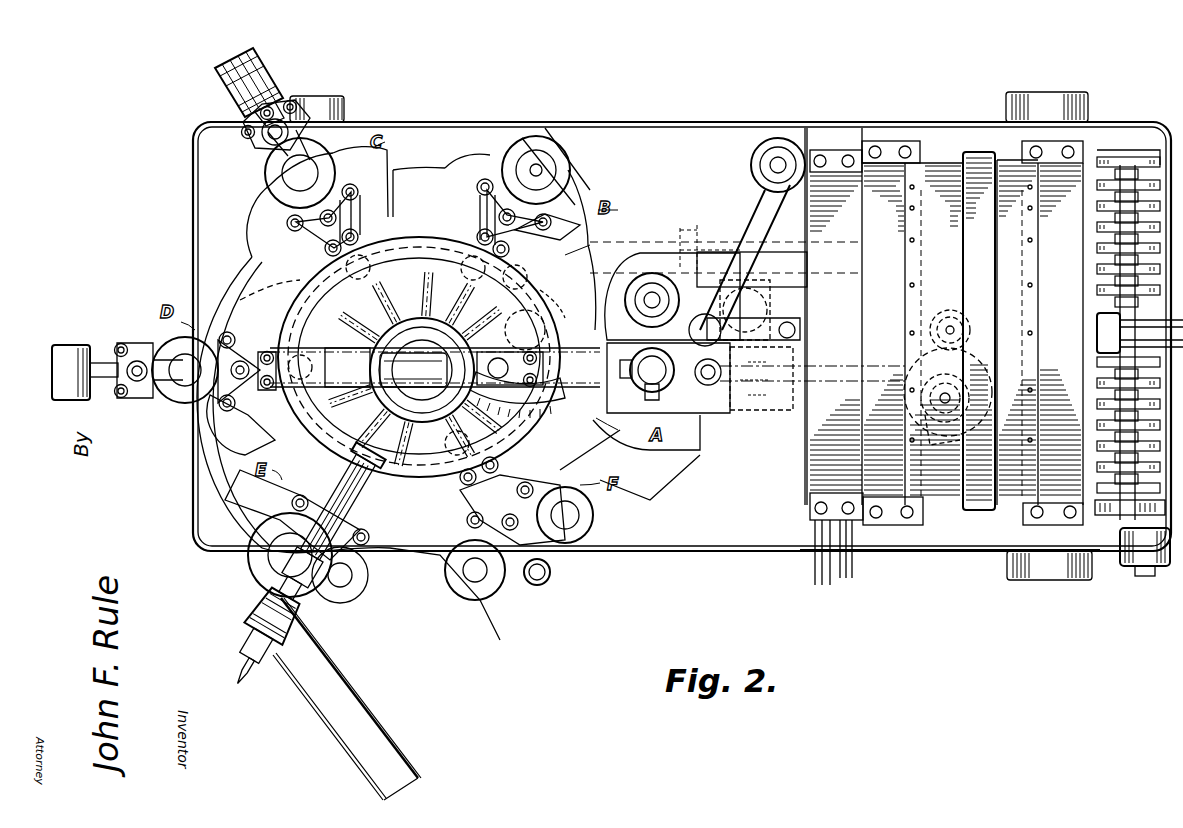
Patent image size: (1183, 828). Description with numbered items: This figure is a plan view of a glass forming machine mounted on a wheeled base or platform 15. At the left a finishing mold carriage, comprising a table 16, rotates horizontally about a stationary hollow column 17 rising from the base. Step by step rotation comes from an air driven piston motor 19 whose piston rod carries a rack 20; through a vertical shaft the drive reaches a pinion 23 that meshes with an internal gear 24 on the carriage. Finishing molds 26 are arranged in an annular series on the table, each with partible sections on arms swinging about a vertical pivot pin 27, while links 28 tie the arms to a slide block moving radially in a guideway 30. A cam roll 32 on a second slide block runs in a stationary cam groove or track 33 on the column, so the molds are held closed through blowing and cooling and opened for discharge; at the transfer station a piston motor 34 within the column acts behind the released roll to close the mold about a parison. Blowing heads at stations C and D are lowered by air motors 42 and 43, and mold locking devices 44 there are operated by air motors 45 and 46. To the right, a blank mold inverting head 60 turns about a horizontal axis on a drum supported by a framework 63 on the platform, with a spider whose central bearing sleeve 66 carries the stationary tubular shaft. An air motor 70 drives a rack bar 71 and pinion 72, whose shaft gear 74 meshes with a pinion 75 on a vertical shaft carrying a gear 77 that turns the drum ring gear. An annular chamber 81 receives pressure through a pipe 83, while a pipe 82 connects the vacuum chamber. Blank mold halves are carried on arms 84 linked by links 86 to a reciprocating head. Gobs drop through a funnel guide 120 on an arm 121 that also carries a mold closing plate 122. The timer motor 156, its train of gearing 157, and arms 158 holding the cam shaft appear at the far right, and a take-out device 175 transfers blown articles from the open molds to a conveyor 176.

The wheeled base or platform 15 is at (644, 138).
The table 16 is at (242, 256).
The stationary hollow shaft or column 17 is at (380, 368).
The air driven piston motor 19 is at (715, 227).
The rack 20 is at (630, 246).
The pinion 23 is at (542, 292).
The internal gear 24 is at (576, 266).
The finishing molds 26 is at (570, 172).
The vertical pivot pin 27 is at (492, 204).
The links 28 is at (546, 226).
The guideway 30 is at (436, 262).
The cam roll 32 is at (504, 407).
The stationary cam groove or track 33 is at (270, 285).
The piston motor 34 is at (432, 362).
The air motor 42 is at (300, 172).
The air motor 43 is at (188, 387).
The mold locking devices 44 is at (248, 135).
The air motor 45 is at (218, 77).
The air motor 46 is at (76, 349).
The blank mold inverting head 60 is at (787, 410).
The framework 63 is at (952, 543).
The central bearing sleeve 66 is at (1097, 342).
The air motor 70 is at (730, 407).
The rack bar 71 is at (823, 374).
The pinion 72 is at (935, 419).
The gear 74 is at (1000, 370).
The pinion 75 is at (969, 322).
The gear 77 is at (930, 314).
The annular chamber 81 is at (752, 310).
The pipe 82 is at (815, 580).
The pipe 83 is at (854, 574).
The arms 84 is at (690, 277).
The links 86 is at (738, 278).
The funnel guide 120 is at (650, 312).
The arm 121 is at (762, 218).
The mold closing plate 122 is at (731, 324).
The motor 156 is at (1158, 571).
The train of gearing 157 is at (1104, 512).
The arms 158 is at (1100, 156).
The take-out device 175 is at (390, 508).
The conveyor 176 is at (338, 653).